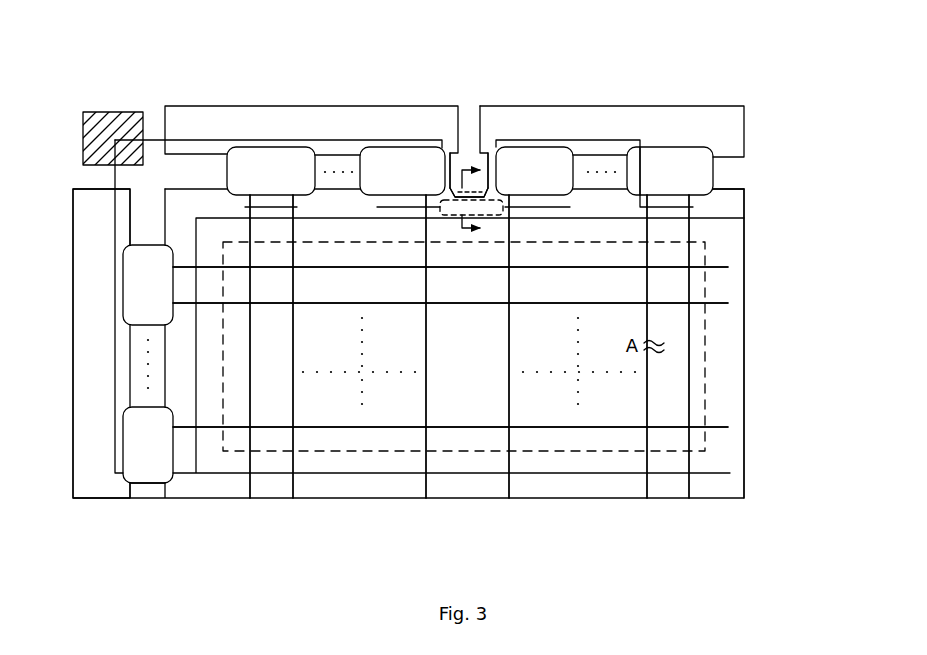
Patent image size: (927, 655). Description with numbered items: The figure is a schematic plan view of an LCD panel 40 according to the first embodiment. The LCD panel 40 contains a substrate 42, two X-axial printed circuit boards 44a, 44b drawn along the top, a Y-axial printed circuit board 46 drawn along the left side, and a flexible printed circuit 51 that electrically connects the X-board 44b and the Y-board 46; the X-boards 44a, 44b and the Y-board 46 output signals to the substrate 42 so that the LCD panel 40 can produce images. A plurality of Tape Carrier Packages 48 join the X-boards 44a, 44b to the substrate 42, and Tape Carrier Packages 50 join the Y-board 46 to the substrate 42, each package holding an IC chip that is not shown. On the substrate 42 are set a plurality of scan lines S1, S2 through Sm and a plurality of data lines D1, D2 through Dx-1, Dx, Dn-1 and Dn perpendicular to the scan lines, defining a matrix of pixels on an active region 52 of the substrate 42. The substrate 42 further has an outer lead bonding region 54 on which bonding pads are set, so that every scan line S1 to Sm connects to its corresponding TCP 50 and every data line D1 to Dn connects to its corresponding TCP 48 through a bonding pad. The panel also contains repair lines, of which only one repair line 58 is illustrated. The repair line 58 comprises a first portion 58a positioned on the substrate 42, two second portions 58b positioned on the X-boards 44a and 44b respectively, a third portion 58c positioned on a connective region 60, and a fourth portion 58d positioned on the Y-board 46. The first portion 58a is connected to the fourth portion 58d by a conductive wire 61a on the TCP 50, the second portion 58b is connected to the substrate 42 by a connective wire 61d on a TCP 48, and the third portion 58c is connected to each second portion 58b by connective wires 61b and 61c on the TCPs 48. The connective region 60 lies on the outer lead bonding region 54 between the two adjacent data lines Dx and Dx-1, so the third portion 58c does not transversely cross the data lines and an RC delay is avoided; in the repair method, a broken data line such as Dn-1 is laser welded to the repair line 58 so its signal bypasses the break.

The LCD panel 40 is at (756, 78).
The substrate 42 is at (744, 390).
The X-axial printed circuit board 44a is at (624, 134).
The X-axial printed circuit board 44b is at (309, 134).
The Y-axial printed circuit board 46 is at (107, 382).
The Tape Carrier Package 48 is at (259, 184).
The Tape Carrier Package 50 is at (137, 297).
The flexible printed circuit 51 is at (115, 112).
The active region 52 is at (705, 357).
The outer lead bonding region 54 is at (744, 205).
The repair line 58 is at (390, 482).
The first portion 58a is at (555, 475).
The second portion 58b is at (340, 140).
The third portion 58c is at (487, 212).
The fourth portion 58d is at (115, 312).
The connective region 60 is at (442, 218).
The conductive wire 61a is at (148, 484).
The connective wire 61b is at (493, 163).
The connective wire 61c is at (440, 163).
The connective wire 61d is at (642, 170).
The scan line S1 is at (728, 267).
The scan line S2 is at (728, 303).
The scan line Sm is at (728, 427).
The data line D1 is at (250, 498).
The data line D2 is at (293, 498).
The data line Dx-1 is at (426, 498).
The data line Dx is at (509, 498).
The data line Dn-1 is at (647, 498).
The data line Dn is at (689, 498).